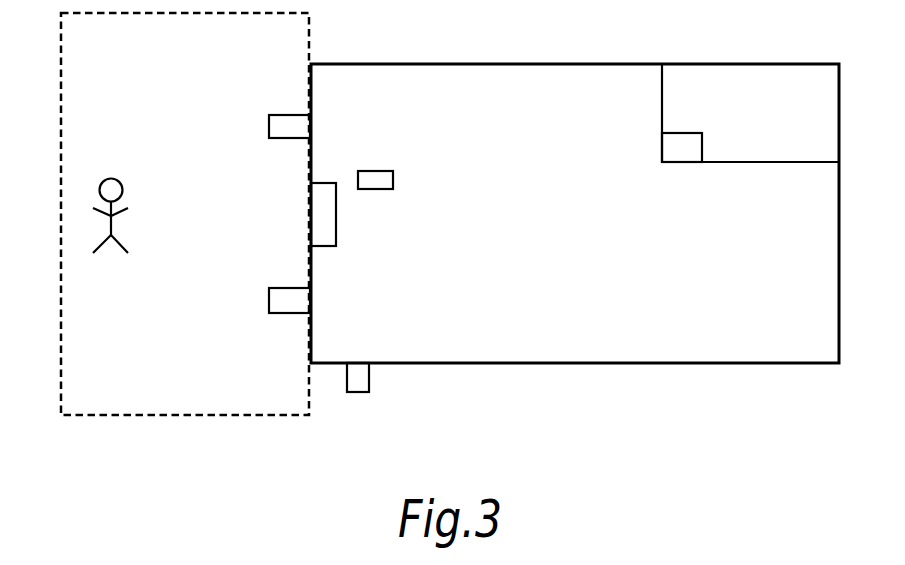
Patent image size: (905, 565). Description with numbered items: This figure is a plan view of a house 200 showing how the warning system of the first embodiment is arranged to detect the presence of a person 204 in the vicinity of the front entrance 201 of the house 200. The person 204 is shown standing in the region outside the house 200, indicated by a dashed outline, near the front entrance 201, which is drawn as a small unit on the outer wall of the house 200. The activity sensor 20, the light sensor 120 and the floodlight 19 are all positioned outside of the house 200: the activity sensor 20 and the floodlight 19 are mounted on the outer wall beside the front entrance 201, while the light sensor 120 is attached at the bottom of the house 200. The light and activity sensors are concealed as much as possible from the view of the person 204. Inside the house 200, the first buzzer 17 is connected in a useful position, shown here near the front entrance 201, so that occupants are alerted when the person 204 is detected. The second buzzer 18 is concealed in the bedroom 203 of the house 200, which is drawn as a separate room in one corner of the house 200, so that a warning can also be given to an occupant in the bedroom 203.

The first buzzer 17 is at (373, 171).
The second buzzer 18 is at (683, 133).
The floodlight 19 is at (281, 288).
The activity sensor 20 is at (282, 115).
The light sensor 120 is at (355, 392).
The house 200 is at (670, 363).
The front entrance 201 is at (336, 220).
The bedroom 203 is at (775, 162).
The person 204 is at (109, 252).